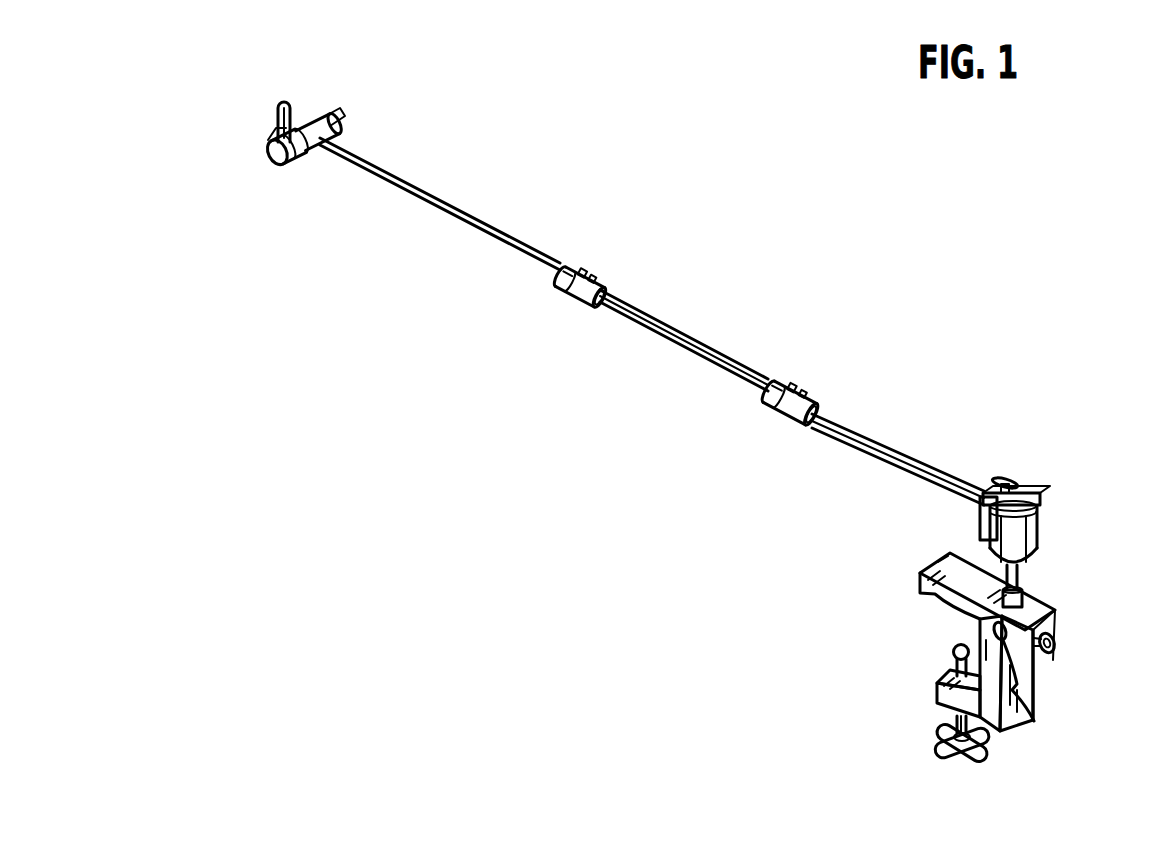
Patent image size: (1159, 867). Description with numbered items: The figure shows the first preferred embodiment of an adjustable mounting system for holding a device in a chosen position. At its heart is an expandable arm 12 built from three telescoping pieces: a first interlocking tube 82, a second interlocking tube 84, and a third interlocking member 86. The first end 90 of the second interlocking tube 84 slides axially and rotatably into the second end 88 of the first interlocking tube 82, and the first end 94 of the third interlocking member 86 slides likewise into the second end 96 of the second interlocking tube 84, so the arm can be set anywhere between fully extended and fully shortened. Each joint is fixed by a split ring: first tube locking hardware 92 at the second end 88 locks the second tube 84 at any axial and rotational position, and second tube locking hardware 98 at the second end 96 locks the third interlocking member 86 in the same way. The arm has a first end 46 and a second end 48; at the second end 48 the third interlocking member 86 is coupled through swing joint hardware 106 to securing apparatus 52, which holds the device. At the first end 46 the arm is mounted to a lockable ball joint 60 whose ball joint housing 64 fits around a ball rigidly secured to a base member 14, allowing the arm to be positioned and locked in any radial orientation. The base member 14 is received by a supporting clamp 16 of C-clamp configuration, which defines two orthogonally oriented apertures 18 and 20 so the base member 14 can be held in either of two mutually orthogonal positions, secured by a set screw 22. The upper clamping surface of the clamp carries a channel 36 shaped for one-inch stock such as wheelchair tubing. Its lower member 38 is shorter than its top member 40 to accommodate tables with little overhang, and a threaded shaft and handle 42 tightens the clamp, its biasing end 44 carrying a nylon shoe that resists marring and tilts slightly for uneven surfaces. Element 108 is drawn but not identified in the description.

The expandable arm 12 is at (765, 318).
The base member 14 is at (1020, 582).
The supporting clamp 16 is at (1100, 711).
The aperture 18 is at (1030, 600).
The aperture 20 is at (1034, 721).
The set screw 22 is at (1056, 646).
The channel 36 is at (946, 603).
The lower member 38 is at (937, 687).
The top member 40 is at (938, 562).
The threaded shaft and handle 42 is at (946, 733).
The biasing end 44 is at (951, 648).
The first end 46 is at (980, 478).
The second end 48 is at (323, 165).
The securing apparatus 52 is at (282, 104).
The lockable ball joint 60 is at (1120, 518).
The ball joint housing 64 is at (1014, 538).
The first interlocking tube 82 is at (921, 468).
The second interlocking tube 84 is at (704, 360).
The third interlocking member 86 is at (497, 232).
The second end of first interlocking tube 88 is at (833, 397).
The first end of second interlocking tube 90 is at (777, 373).
The first tube locking hardware 92 is at (783, 428).
The first end of third interlocking member 94 is at (573, 246).
The second end of second interlocking tube 96 is at (617, 279).
The second tube locking hardware 98 is at (577, 296).
The swing joint hardware 106 is at (303, 98).
The pin cap 108 is at (276, 128).